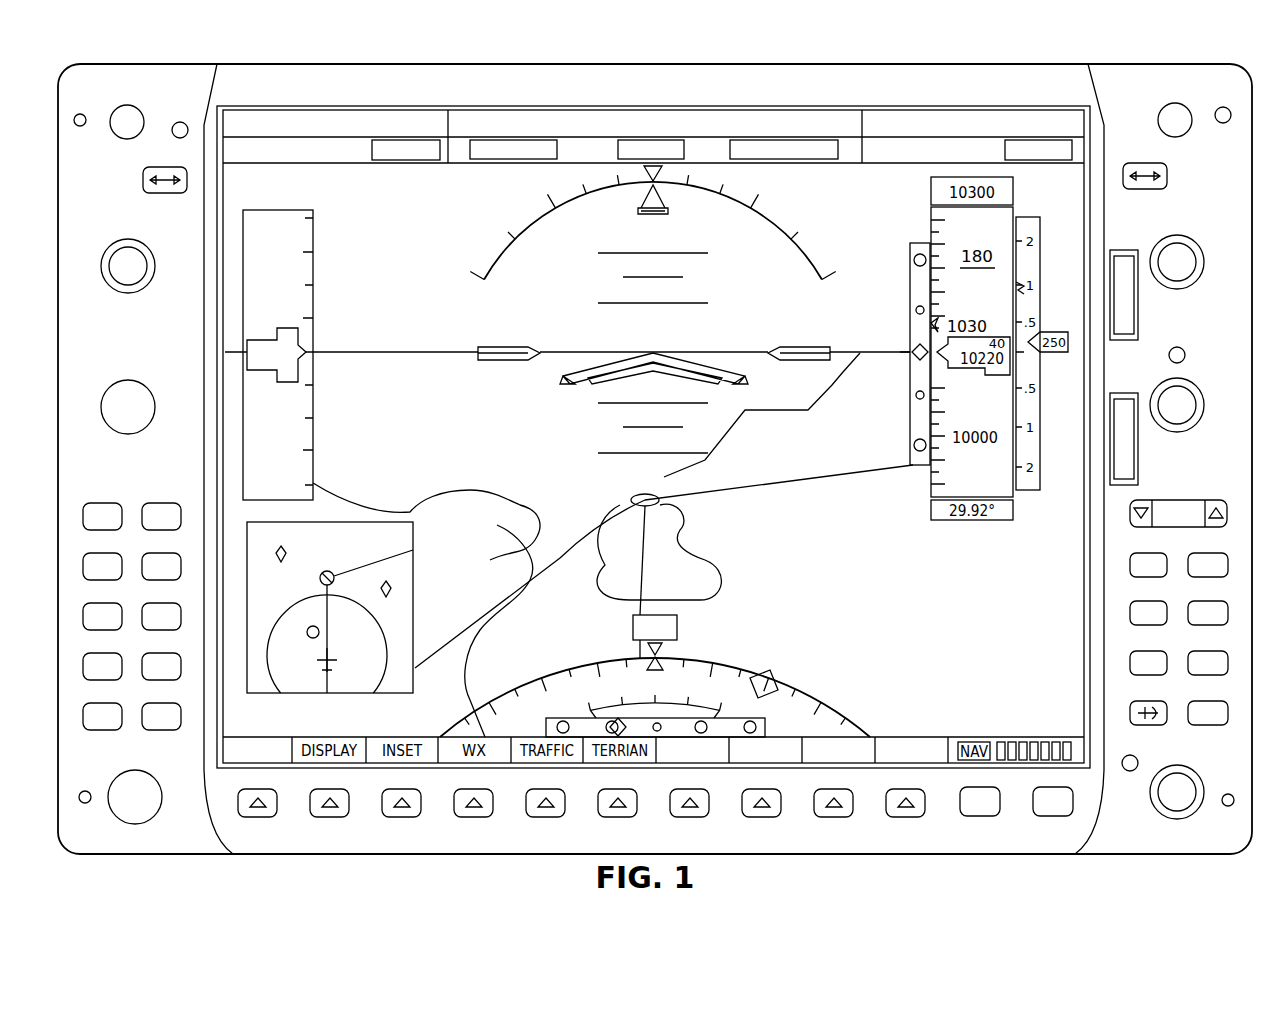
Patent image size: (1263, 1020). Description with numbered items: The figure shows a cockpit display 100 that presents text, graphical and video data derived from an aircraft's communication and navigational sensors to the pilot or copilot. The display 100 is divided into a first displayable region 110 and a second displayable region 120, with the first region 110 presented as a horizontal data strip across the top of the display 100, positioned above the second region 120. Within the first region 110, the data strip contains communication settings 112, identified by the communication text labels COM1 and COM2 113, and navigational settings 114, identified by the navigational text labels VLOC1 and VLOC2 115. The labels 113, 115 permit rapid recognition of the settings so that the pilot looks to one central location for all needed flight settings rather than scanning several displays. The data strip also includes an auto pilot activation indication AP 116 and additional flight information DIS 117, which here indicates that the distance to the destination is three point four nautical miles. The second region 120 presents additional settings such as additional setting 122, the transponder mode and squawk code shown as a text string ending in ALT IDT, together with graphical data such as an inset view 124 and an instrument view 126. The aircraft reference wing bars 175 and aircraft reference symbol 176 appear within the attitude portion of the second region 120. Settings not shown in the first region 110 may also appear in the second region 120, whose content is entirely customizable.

The cockpit display 100 is at (428, 107).
The first displayable region 110 is at (462, 166).
The communication settings 112 is at (336, 152).
The communication text labels COM1 and COM2 113 is at (269, 153).
The navigational settings 114 is at (972, 150).
The navigational text labels VLOC1 and VLOC2 115 is at (862, 152).
The auto pilot activation indication AP 116 is at (650, 140).
The additional flight information DIS 117 is at (725, 132).
The second displayable region 120 is at (874, 611).
The additional setting 122 is at (326, 720).
The inset view 124 is at (343, 557).
The instrument view 126 is at (311, 398).
The aircraft reference wing bars 175 is at (808, 347).
The aircraft reference symbol 176 is at (707, 366).